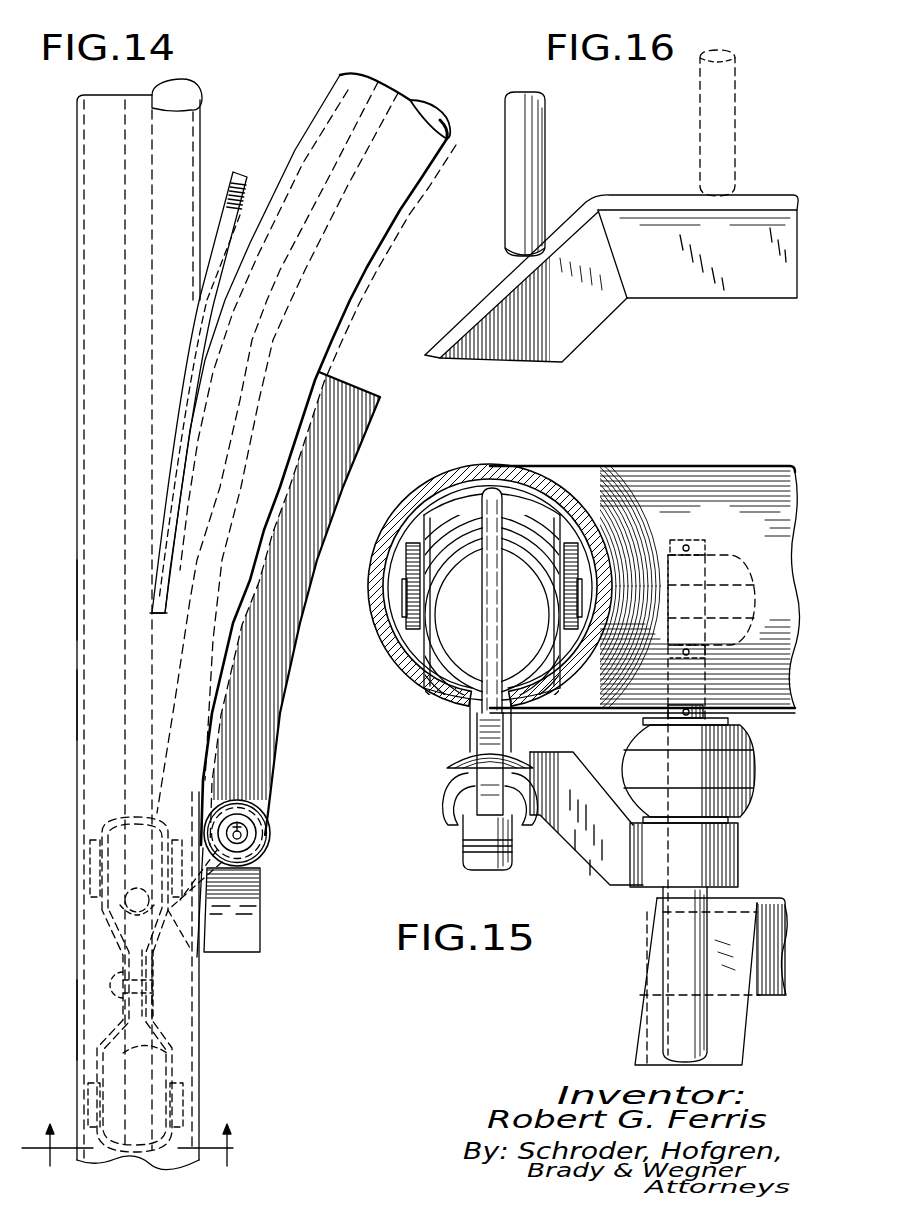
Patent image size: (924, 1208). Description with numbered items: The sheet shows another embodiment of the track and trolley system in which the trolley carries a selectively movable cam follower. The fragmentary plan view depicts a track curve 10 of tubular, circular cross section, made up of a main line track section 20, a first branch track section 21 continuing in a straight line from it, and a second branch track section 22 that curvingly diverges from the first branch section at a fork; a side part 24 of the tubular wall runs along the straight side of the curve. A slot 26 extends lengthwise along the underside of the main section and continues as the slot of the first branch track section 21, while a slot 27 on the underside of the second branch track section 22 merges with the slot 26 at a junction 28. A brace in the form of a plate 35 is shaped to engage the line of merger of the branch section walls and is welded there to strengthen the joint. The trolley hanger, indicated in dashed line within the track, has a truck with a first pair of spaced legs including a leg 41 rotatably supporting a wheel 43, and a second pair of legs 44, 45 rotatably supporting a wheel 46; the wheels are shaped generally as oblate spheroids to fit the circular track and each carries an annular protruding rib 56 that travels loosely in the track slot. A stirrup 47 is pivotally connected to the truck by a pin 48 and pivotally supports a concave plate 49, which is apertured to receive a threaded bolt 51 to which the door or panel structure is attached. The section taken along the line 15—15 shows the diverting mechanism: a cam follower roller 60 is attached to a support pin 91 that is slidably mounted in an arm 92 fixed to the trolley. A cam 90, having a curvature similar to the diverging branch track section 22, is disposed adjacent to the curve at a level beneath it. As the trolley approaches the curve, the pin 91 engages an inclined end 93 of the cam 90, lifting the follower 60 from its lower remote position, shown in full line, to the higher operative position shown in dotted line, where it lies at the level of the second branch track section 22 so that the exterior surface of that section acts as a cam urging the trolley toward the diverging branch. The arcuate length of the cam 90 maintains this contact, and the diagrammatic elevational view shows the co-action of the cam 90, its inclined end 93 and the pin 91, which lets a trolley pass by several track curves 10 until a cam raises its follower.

In FIG. 14, the track curve 10 is at (78, 597).
In FIG. 15, the track curve 10 is at (374, 621).
In FIG. 14, the section line 15 is at (145, 1145).
In FIG. 14, the main line track section 20 is at (90, 1012).
In FIG. 15, the main line track section 20 is at (385, 655).
In FIG. 14, the first branch track section 21 is at (77, 223).
In FIG. 14, the second branch track section 22 is at (362, 268).
In FIG. 15, the second branch track section 22 is at (626, 467).
In FIG. 14, the side part 24 is at (77, 702).
In FIG. 14, the slot 26 is at (130, 332).
In FIG. 15, the slot 26 is at (470, 708).
In FIG. 14, the slot 27 is at (410, 108).
In FIG. 14, the junction 28 is at (163, 614).
In FIG. 14, the plate 35 is at (243, 172).
In FIG. 14, the leg 41 is at (125, 900).
In FIG. 14, the wheel 43 is at (105, 820).
In FIG. 14, the leg 44 is at (92, 1065).
In FIG. 15, the leg 44 is at (408, 564).
In FIG. 14, the leg 45 is at (160, 1072).
In FIG. 15, the leg 45 is at (566, 560).
In FIG. 14, the wheel 46 is at (165, 1060).
In FIG. 15, the wheel 46 is at (455, 495).
In FIG. 14, the stirrup 47 is at (125, 963).
In FIG. 15, the stirrup 47 is at (476, 730).
In FIG. 14, the pin 48 is at (112, 985).
In FIG. 15, the concave plate 49 is at (445, 805).
In FIG. 15, the threaded bolt 51 is at (463, 848).
In FIG. 15, the annular protruding rib 56 is at (492, 555).
In FIG. 14, the cam follower roller 60 is at (268, 830).
In FIG. 15, the cam follower roller 60 is at (745, 570).
In FIG. 14, the cam 90 is at (270, 683).
In FIG. 16, the cam 90 is at (640, 197).
In FIG. 15, the cam 90 is at (775, 898).
In FIG. 14, the support pin 91 is at (245, 843).
In FIG. 16, the support pin 91 is at (535, 145).
In FIG. 15, the support pin 91 is at (685, 540).
In FIG. 14, the arm 92 is at (200, 948).
In FIG. 15, the arm 92 is at (592, 840).
In FIG. 14, the inclined end 93 is at (250, 922).
In FIG. 16, the inclined end 93 is at (465, 318).
In FIG. 15, the inclined end 93 is at (730, 1018).